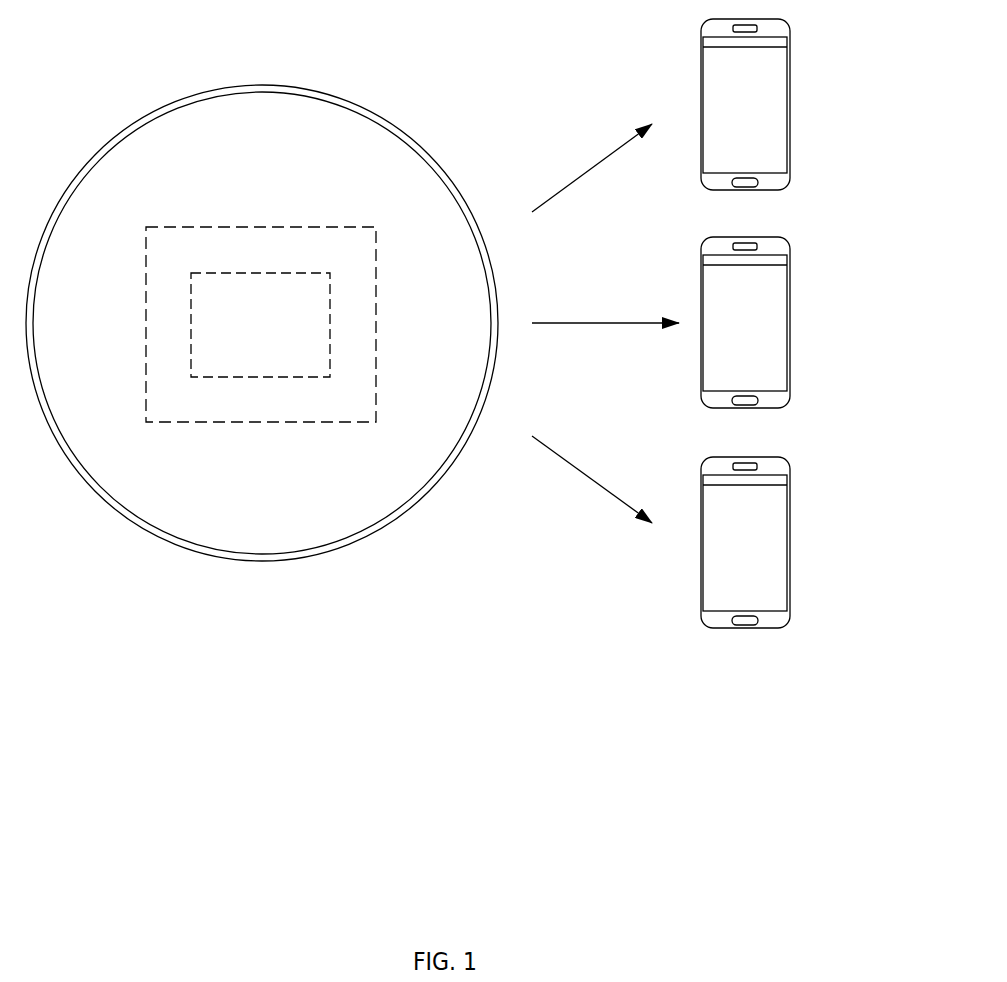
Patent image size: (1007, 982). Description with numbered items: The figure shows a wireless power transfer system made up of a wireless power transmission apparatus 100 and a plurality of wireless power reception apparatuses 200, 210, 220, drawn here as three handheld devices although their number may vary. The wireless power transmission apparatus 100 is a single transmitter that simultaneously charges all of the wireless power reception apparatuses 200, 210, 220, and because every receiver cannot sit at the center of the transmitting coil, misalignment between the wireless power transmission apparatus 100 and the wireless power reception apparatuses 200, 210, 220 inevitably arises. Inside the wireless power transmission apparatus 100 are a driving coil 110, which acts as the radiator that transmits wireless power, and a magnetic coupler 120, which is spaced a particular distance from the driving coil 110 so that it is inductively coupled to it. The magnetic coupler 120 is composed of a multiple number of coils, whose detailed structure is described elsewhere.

The wireless power transmission apparatus 100 is at (344, 100).
The driving coil 110 is at (298, 227).
The magnetic coupler 120 is at (330, 314).
The wireless power reception apparatus 200 is at (790, 100).
The wireless power reception apparatus 210 is at (787, 322).
The wireless power reception apparatus 220 is at (787, 542).